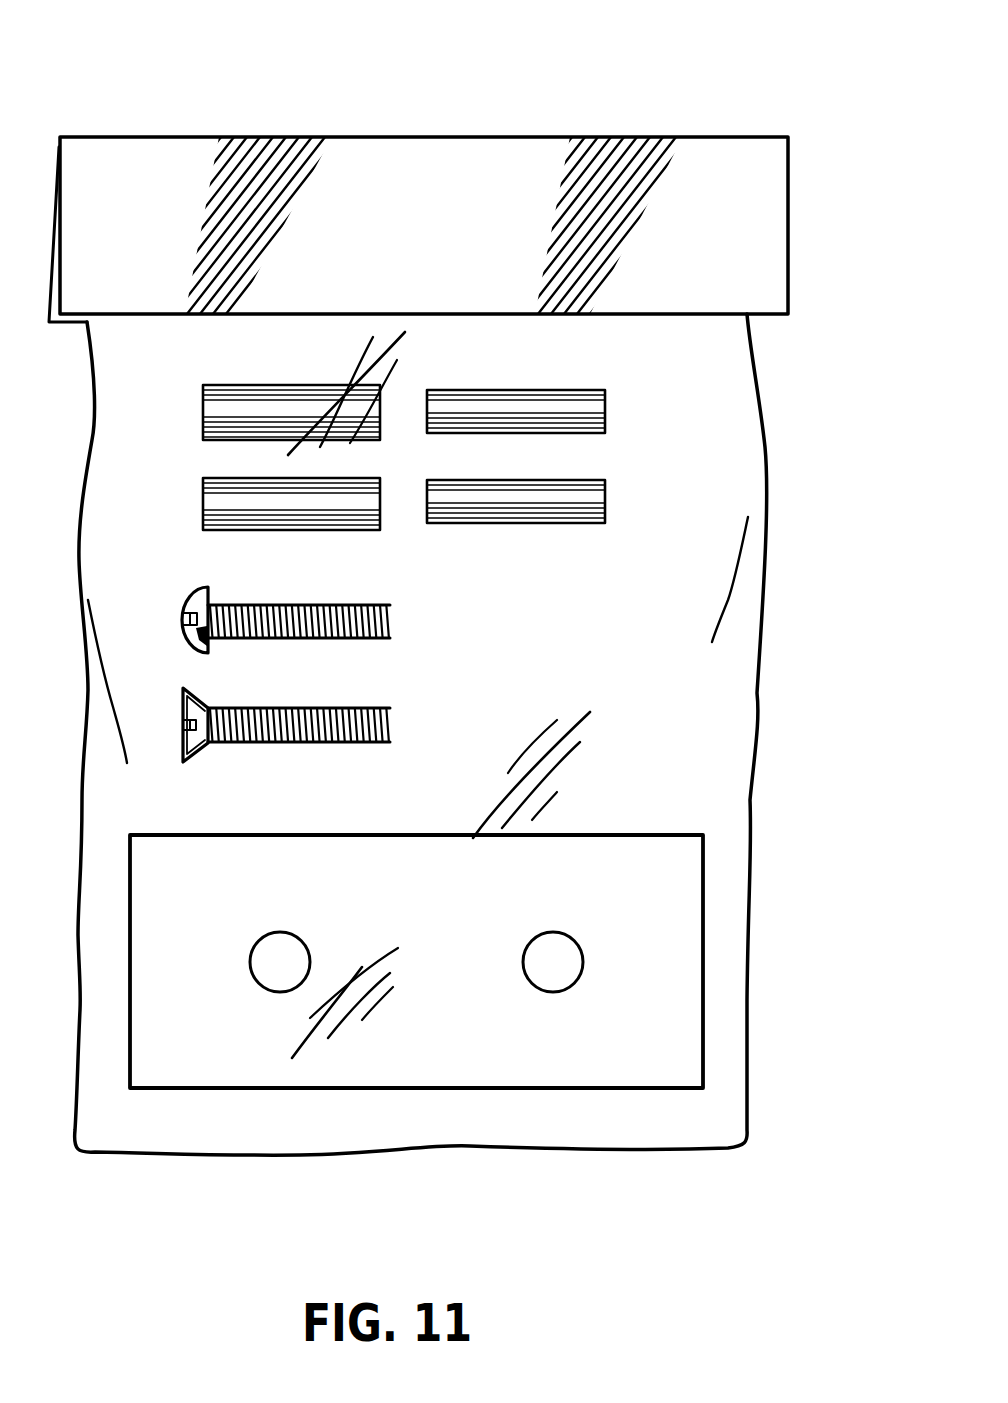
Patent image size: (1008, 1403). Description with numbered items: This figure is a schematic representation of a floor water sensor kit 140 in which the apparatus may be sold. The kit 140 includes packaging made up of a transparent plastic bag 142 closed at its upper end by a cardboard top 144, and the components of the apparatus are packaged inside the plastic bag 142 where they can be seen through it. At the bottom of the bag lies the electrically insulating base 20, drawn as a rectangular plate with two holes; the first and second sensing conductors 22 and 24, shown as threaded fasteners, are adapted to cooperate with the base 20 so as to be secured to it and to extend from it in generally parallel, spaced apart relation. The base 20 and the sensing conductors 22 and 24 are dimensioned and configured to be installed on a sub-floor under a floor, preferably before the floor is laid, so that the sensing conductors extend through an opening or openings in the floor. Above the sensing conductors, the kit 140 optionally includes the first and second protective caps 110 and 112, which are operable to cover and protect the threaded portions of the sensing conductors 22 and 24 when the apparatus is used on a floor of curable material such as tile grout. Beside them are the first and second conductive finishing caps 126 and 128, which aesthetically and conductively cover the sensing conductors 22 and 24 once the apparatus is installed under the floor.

The floor water sensor kit 140 is at (492, 68).
The cardboard top 144 is at (789, 217).
The transparent plastic bag 142 is at (733, 688).
The first protective cap 110 is at (212, 410).
The second protective cap 112 is at (212, 500).
The first conductive finishing cap 126 is at (592, 407).
The second conductive finishing cap 128 is at (592, 497).
The first sensing conductor 22 is at (392, 620).
The second sensing conductor 24 is at (392, 724).
The electrically insulating base 20 is at (662, 968).